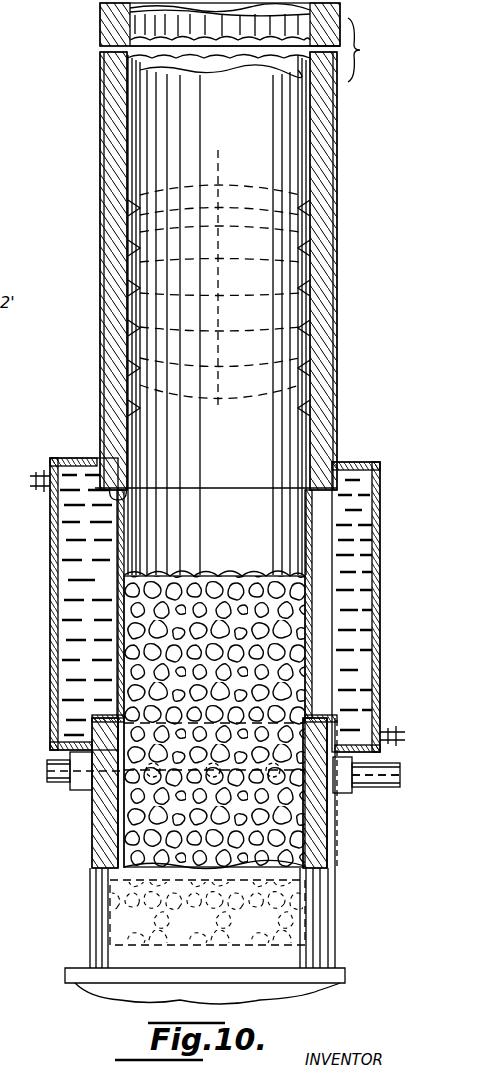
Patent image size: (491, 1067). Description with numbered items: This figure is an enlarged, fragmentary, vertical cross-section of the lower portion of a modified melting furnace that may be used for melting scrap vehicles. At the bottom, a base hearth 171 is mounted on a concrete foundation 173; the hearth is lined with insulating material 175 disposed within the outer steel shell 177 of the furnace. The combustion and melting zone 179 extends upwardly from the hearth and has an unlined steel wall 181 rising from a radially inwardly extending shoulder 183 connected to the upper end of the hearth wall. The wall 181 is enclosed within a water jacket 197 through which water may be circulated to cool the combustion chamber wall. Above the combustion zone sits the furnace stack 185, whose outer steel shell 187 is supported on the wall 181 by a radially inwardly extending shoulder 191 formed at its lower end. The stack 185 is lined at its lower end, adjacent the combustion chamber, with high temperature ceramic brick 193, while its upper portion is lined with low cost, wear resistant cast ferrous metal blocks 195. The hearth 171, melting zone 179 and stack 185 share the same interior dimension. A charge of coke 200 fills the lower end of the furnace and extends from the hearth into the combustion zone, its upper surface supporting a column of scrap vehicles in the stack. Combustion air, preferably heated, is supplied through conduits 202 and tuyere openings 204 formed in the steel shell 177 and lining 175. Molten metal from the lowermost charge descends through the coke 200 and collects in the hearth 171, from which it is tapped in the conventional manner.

The cast ferrous metal blocks 195 is at (110, 28).
The furnace stack 185 is at (96, 170).
The outer steel shell 187 is at (337, 168).
The high temperature ceramic brick 193 is at (115, 372).
The radially inwardly extending shoulder 191 is at (125, 490).
The radially inwardly extending shoulder 183 is at (105, 715).
The unlined steel wall 181 is at (305, 540).
The water jacket 197 is at (55, 548).
The combustion and melting zone 179 is at (205, 582).
The insulating material 175 is at (103, 853).
The outer steel shell 177 is at (335, 830).
The charge of coke 200 is at (110, 832).
The tuyere openings 204 is at (95, 768).
The conduits 202 is at (355, 782).
The base hearth 171 is at (97, 905).
The concrete foundation 173 is at (340, 968).